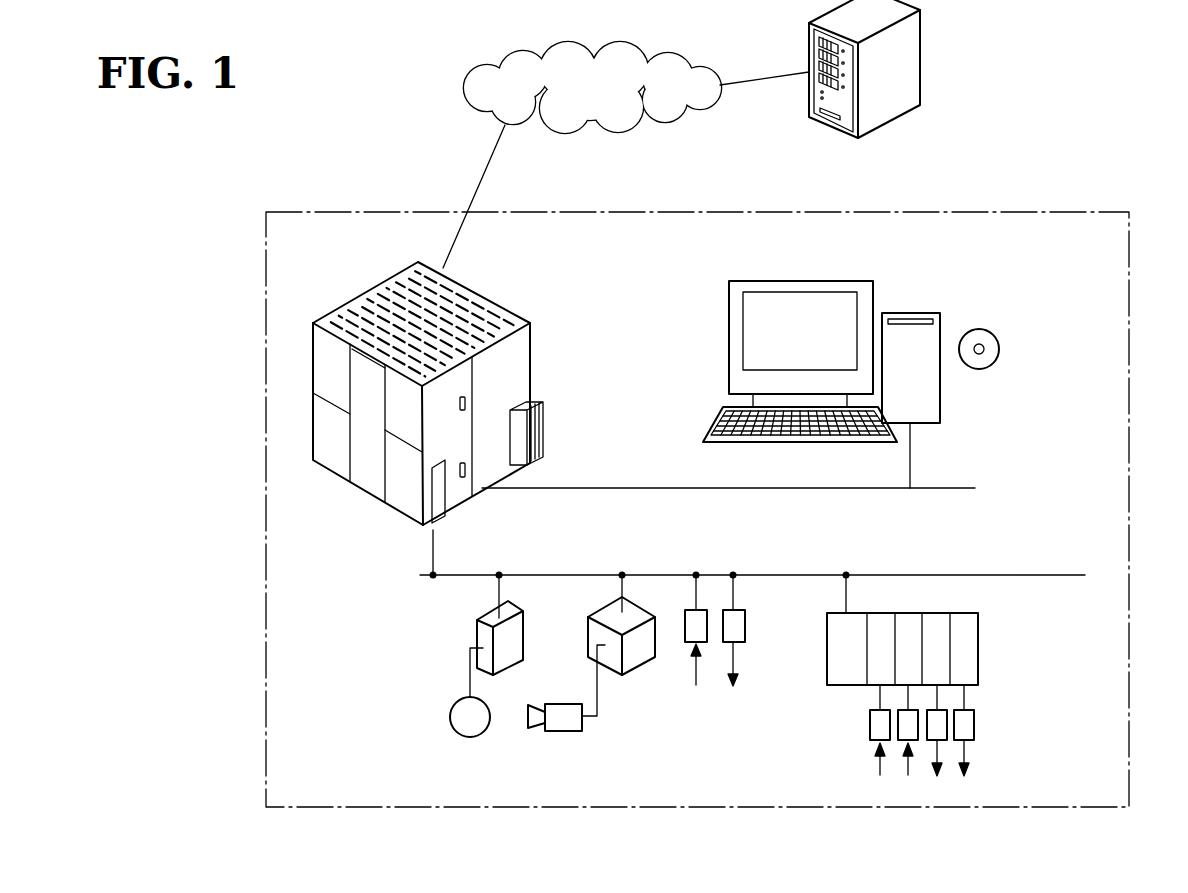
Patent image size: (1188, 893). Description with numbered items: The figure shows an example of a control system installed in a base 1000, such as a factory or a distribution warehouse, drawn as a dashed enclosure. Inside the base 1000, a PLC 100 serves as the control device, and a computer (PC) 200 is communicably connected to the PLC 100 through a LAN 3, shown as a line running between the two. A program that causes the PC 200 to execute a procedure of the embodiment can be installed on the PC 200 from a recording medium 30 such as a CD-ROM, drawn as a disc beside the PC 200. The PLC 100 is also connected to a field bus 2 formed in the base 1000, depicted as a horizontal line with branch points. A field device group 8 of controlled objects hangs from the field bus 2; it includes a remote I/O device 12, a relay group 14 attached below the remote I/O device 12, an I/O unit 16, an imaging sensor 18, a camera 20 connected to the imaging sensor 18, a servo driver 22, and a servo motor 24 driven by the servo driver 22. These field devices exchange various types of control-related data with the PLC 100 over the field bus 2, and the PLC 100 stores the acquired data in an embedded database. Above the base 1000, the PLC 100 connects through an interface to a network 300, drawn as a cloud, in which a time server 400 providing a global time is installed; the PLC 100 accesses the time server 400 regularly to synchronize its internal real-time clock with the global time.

The base 1000 is at (266, 704).
The PLC 100 is at (502, 312).
The computer (PC) 200 is at (940, 408).
The network 300 is at (667, 50).
The time server 400 is at (922, 48).
The recording medium 30 is at (1000, 349).
The LAN (Local Area Network) 3 is at (645, 487).
The field bus 2 is at (1034, 573).
The field device group 8 is at (940, 681).
The remote I/O device 12 is at (978, 645).
The relay group 14 is at (946, 730).
The I/O unit 16 is at (750, 605).
The imaging sensor 18 is at (645, 663).
The camera 20 is at (563, 733).
The servo driver 22 is at (524, 623).
The servo motor 24 is at (468, 738).